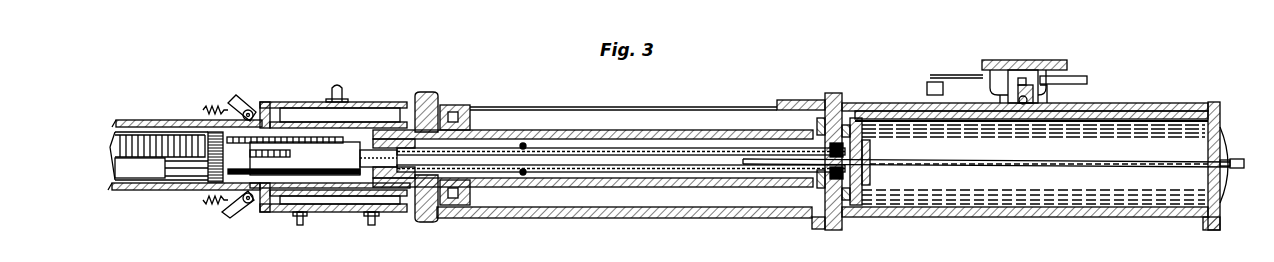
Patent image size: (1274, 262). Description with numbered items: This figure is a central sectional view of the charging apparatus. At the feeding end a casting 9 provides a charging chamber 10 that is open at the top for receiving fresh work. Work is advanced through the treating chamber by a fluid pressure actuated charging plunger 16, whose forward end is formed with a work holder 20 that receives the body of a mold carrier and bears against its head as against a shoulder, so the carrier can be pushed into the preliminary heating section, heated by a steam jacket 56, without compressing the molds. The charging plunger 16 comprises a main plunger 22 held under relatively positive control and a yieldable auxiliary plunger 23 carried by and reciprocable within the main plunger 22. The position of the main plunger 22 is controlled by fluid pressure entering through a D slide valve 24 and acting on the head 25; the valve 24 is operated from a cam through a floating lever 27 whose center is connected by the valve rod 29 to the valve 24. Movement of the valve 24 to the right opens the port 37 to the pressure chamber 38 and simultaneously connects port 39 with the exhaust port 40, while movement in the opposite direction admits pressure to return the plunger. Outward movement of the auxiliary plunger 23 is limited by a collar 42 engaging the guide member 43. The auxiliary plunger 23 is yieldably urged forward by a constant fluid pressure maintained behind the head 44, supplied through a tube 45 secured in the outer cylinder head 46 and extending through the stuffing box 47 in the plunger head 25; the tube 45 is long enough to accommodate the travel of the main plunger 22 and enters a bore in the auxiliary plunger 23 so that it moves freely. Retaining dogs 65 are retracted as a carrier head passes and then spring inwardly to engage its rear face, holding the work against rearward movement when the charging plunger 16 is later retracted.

The casting 9 is at (657, 103).
The charging chamber 10 is at (715, 118).
The charging plunger 16 is at (357, 176).
The work holder 20 is at (268, 176).
The main plunger 22 is at (597, 188).
The auxiliary plunger 23 is at (548, 173).
The D slide valve 24 is at (1030, 76).
The head 25 is at (867, 118).
The floating lever 27 is at (928, 82).
The valve rod 29 is at (960, 74).
The port 37 is at (1108, 106).
The pressure chamber 38 is at (1162, 135).
The port 39 is at (910, 106).
The exhaust port 40 is at (1022, 91).
The collar 42 is at (524, 145).
The guide member 43 is at (480, 132).
The head 44 is at (805, 138).
The tube 45 is at (1112, 168).
The outer cylinder head 46 is at (1222, 178).
The stuffing box 47 is at (868, 185).
The steam jacket 56 is at (368, 115).
The retaining dogs 65 is at (237, 100).